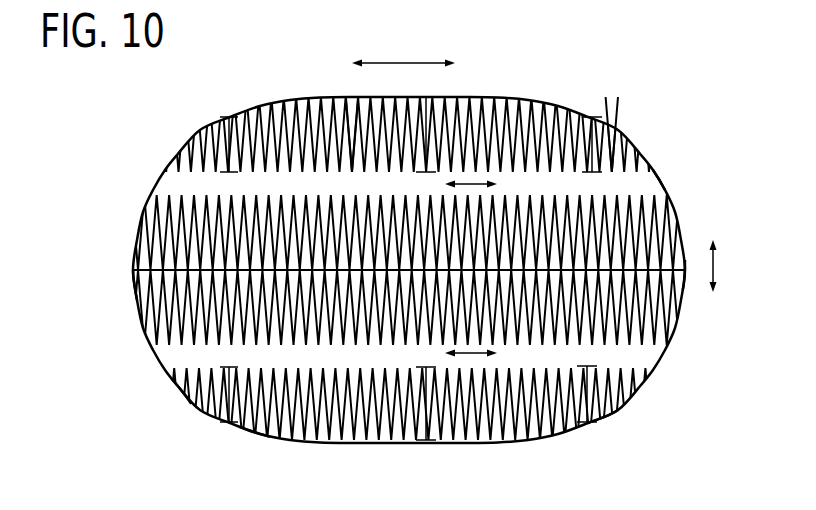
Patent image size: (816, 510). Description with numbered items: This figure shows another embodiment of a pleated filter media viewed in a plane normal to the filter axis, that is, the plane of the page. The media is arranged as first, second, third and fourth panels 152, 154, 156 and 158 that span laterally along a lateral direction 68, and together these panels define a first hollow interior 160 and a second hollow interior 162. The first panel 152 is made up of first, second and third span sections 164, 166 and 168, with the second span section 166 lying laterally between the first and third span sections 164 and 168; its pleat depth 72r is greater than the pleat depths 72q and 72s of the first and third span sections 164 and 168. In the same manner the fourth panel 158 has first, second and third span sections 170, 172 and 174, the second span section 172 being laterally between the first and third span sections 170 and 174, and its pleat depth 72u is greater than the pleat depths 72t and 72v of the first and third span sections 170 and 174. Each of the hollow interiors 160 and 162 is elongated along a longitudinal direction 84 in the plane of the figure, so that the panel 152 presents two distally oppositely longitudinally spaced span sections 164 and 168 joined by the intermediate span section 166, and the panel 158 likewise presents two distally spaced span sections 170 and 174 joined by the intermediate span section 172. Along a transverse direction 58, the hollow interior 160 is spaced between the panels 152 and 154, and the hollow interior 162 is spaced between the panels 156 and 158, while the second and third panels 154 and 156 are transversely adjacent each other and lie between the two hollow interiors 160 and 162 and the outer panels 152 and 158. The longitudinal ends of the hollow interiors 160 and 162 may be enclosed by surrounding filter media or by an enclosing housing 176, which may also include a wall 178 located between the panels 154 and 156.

The transverse direction 58 is at (718, 268).
The lateral direction 68 is at (410, 62).
The pleat depth of first span section 72q is at (229, 180).
The pleat depth of second span section 72r is at (426, 180).
The pleat depth of third span section 72s is at (592, 180).
The pleat depth of first span section 72t is at (229, 360).
The pleat depth of second span section 72u is at (426, 360).
The pleat depth of third span section 72v is at (587, 359).
The longitudinal direction 84 is at (495, 184).
The first panel 152 is at (196, 125).
The second panel 154 is at (128, 250).
The third panel 156 is at (128, 288).
The fourth panel 158 is at (172, 391).
The first hollow interior 160 is at (413, 197).
The second hollow interior 162 is at (368, 366).
The first span section 164 is at (262, 125).
The second span section 166 is at (353, 138).
The third span section 168 is at (610, 140).
The first span section 170 is at (259, 430).
The second span section 172 is at (383, 428).
The third span section 174 is at (608, 398).
The enclosing housing 176 is at (663, 177).
The wall 178 is at (663, 270).